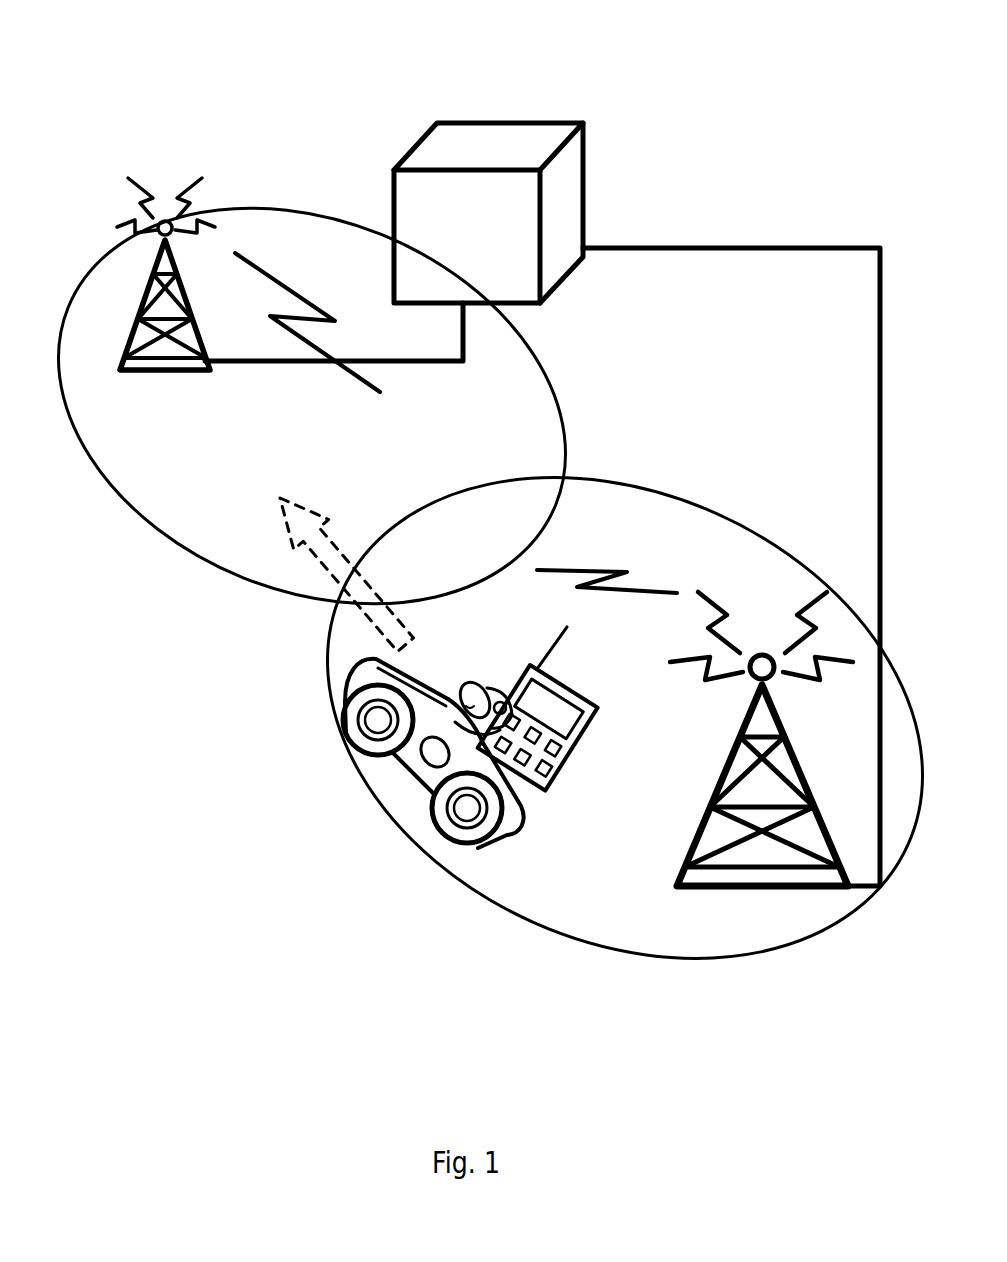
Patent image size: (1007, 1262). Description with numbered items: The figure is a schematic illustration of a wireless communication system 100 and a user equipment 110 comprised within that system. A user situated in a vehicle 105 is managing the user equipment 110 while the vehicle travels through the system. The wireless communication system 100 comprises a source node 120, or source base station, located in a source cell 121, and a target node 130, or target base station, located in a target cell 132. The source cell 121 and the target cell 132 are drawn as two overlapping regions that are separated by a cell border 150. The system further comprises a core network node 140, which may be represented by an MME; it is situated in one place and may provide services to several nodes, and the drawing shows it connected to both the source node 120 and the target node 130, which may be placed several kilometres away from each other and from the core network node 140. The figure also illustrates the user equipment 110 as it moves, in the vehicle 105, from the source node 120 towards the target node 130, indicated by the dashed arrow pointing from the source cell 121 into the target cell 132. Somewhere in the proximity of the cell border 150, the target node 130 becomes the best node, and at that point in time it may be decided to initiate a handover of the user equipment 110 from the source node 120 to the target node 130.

The wireless communication system 100 is at (790, 94).
The vehicle 105 is at (350, 692).
The user equipment 110 is at (577, 747).
The source node 120 is at (730, 888).
The source cell 121 is at (682, 920).
The target node 130 is at (140, 302).
The target cell 132 is at (207, 535).
The core network node 140 is at (494, 218).
The cell border 150 is at (473, 533).